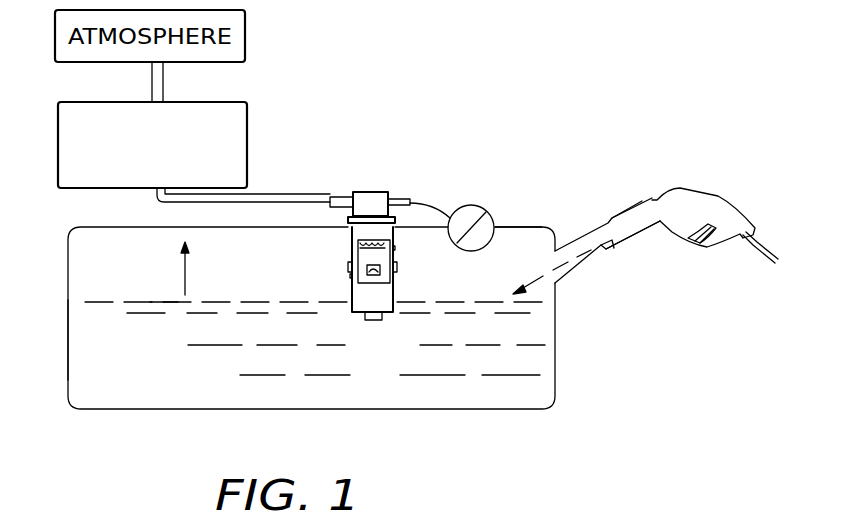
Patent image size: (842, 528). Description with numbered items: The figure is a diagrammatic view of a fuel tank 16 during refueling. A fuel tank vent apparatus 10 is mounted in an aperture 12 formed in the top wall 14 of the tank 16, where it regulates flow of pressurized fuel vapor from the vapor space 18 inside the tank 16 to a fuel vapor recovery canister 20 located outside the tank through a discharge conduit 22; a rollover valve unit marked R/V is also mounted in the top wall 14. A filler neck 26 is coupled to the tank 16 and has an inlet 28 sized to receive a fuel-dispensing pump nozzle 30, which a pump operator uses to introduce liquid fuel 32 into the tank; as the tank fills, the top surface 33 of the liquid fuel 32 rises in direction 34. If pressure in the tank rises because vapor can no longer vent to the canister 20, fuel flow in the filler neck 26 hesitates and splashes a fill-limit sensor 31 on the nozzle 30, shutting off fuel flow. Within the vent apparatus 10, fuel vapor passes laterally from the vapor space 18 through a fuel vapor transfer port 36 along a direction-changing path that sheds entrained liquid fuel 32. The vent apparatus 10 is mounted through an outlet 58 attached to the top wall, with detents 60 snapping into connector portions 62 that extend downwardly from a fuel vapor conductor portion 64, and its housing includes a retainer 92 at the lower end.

The fuel tank vent apparatus 10 is at (298, 270).
The aperture 12 is at (352, 236).
The top wall 14 is at (511, 227).
The fuel tank 16 is at (62, 330).
The vapor space 18 is at (86, 246).
The fuel vapor recovery canister 20 is at (247, 143).
The discharge conduit 22 is at (272, 199).
The filler neck 26 is at (565, 250).
The inlet 28 is at (652, 200).
The fuel-dispensing pump nozzle 30 is at (705, 205).
The fill-limit sensor 31 is at (612, 248).
The liquid fuel 32 is at (167, 388).
The top surface 33 is at (165, 301).
The direction 34 is at (186, 274).
The fuel vapor transfer port 36 is at (392, 280).
The outlet 58 is at (378, 184).
The detents 60 is at (348, 268).
The connector portions 62 is at (352, 276).
The fuel vapor conductor portion 64 is at (380, 195).
The retainer 92 is at (380, 321).